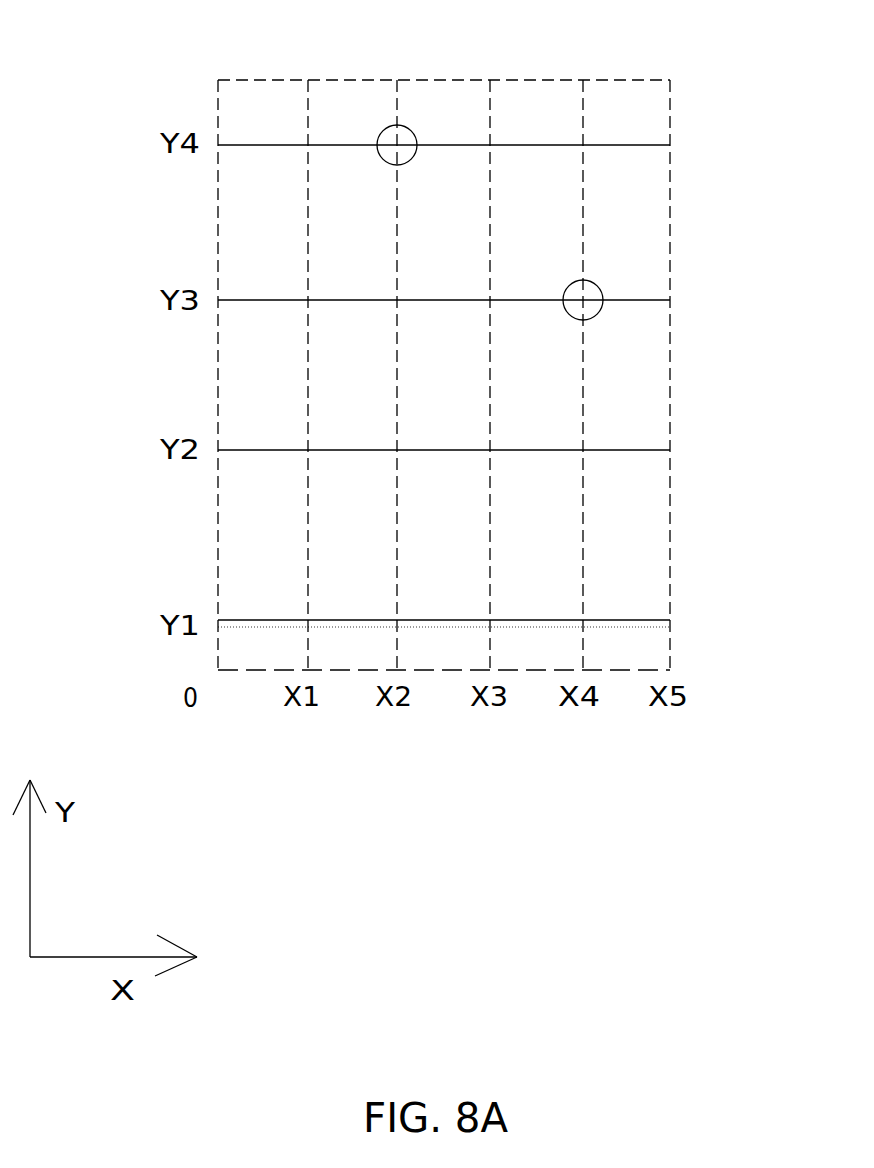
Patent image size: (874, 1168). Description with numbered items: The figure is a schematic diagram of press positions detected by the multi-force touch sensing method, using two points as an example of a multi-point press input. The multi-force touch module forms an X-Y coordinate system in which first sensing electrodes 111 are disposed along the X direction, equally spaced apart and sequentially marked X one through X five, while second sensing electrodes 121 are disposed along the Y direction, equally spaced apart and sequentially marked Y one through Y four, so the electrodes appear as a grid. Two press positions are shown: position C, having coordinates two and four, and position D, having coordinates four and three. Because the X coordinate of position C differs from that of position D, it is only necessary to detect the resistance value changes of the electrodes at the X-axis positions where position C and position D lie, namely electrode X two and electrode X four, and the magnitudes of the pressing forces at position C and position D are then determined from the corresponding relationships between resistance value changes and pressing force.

The first sensing electrodes 111 is at (280, 135).
The second sensing electrodes 121 is at (298, 243).
The position C is at (640, 42).
The position D is at (850, 218).